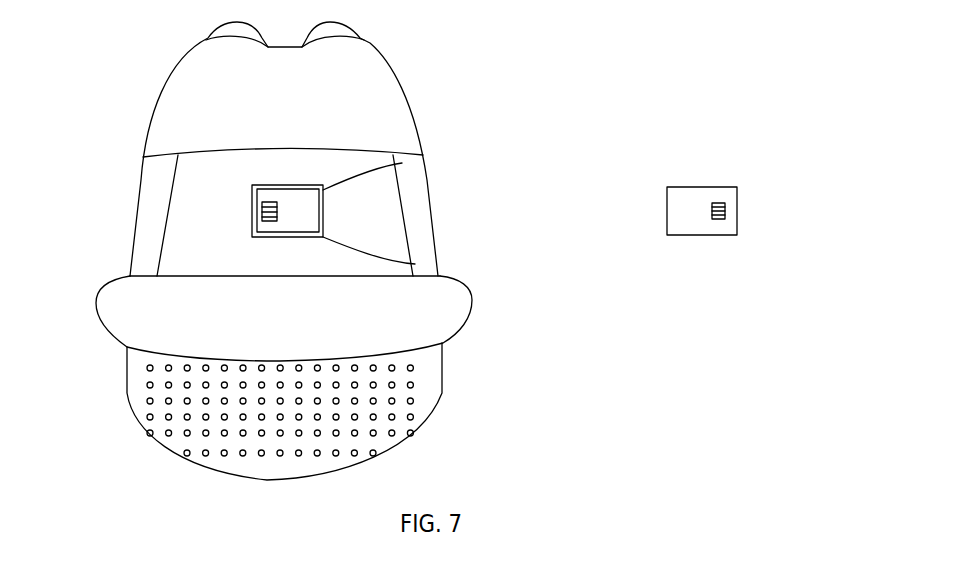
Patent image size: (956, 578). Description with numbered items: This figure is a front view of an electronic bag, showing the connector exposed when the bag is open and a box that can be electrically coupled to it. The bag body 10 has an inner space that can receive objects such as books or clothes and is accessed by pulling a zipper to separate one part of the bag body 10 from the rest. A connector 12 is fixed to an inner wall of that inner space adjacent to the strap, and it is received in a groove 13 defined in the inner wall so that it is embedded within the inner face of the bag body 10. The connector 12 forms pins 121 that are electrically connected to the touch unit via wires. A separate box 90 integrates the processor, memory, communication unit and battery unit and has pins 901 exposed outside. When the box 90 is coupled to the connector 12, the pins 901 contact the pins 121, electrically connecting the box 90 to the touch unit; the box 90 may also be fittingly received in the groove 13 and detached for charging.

The bag body 10 is at (368, 80).
The connector 12 is at (308, 198).
The pins 121 is at (257, 209).
The groove 13 is at (413, 263).
The box 90 is at (690, 197).
The pins 901 is at (725, 219).